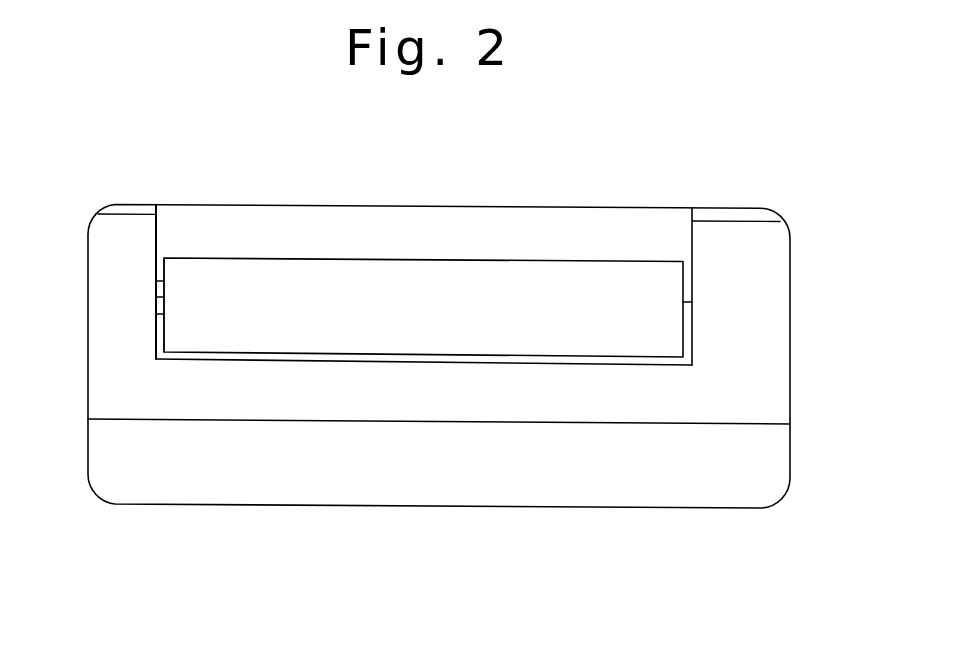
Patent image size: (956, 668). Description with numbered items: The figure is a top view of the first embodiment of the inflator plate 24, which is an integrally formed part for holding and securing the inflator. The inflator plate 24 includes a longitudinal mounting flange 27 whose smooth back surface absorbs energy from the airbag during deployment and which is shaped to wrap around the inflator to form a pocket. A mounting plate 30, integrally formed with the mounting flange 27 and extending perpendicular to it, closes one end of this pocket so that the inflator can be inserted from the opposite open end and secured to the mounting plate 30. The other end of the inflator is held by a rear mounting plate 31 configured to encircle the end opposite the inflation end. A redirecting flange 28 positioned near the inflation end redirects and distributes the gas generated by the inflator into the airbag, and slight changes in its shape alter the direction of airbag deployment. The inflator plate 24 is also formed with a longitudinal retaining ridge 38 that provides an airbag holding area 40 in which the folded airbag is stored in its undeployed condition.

The inflator plate 24 is at (762, 370).
The longitudinal mounting flange 27 is at (354, 220).
The redirecting flange 28 is at (258, 360).
The mounting plate 30 is at (156, 346).
The rear mounting plate 31 is at (692, 327).
The longitudinal retaining ridge 38 is at (767, 478).
The airbag holding area 40 is at (166, 388).